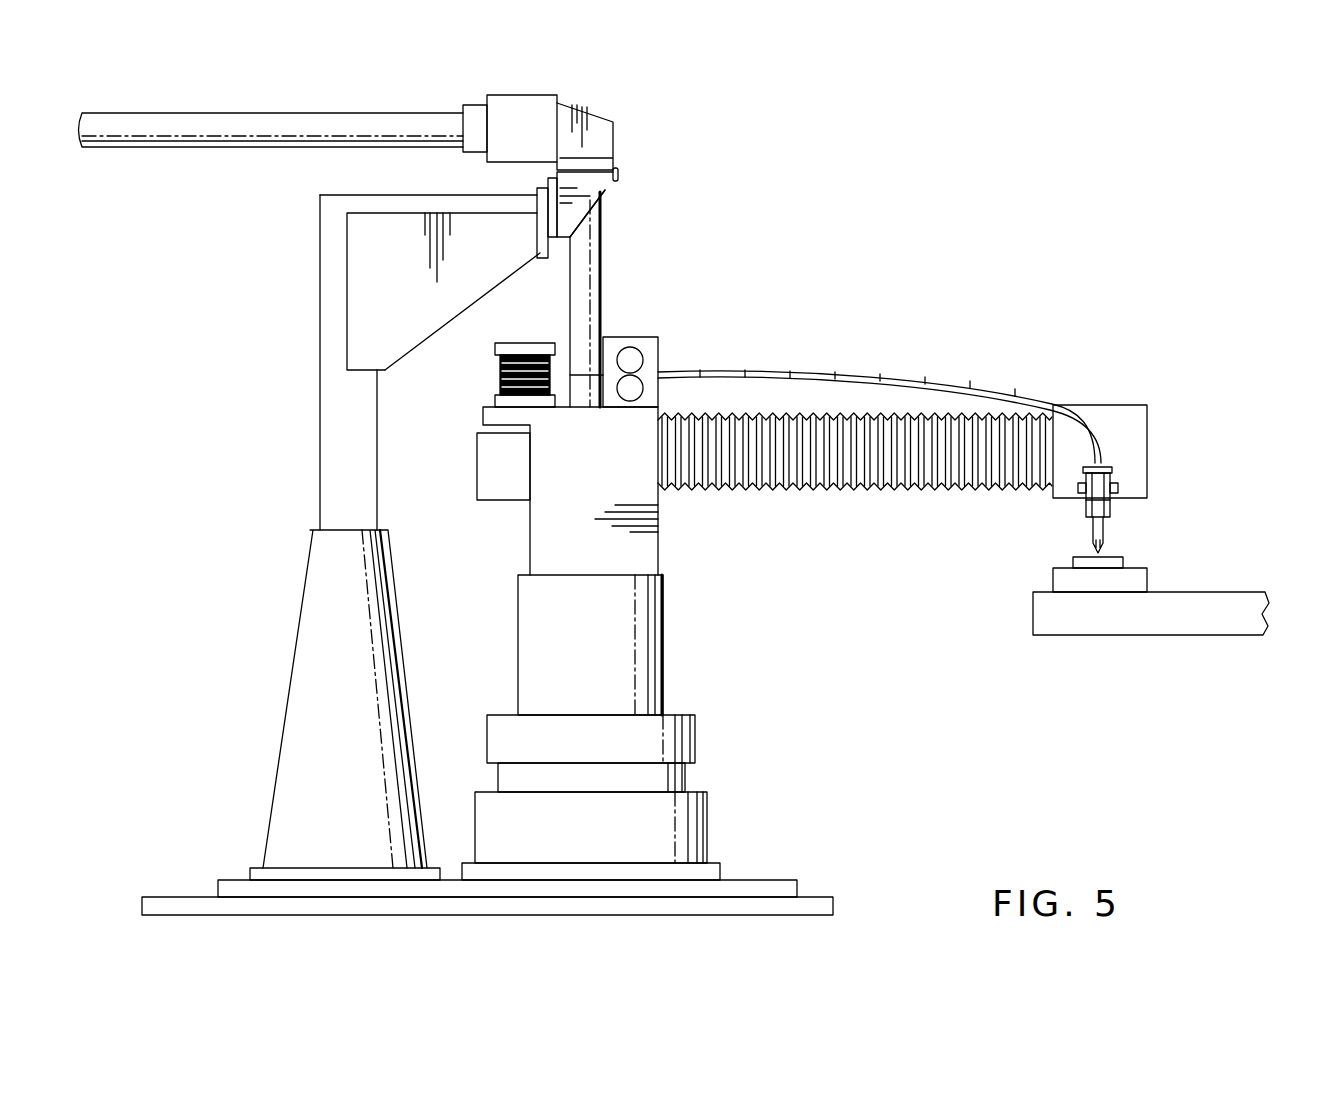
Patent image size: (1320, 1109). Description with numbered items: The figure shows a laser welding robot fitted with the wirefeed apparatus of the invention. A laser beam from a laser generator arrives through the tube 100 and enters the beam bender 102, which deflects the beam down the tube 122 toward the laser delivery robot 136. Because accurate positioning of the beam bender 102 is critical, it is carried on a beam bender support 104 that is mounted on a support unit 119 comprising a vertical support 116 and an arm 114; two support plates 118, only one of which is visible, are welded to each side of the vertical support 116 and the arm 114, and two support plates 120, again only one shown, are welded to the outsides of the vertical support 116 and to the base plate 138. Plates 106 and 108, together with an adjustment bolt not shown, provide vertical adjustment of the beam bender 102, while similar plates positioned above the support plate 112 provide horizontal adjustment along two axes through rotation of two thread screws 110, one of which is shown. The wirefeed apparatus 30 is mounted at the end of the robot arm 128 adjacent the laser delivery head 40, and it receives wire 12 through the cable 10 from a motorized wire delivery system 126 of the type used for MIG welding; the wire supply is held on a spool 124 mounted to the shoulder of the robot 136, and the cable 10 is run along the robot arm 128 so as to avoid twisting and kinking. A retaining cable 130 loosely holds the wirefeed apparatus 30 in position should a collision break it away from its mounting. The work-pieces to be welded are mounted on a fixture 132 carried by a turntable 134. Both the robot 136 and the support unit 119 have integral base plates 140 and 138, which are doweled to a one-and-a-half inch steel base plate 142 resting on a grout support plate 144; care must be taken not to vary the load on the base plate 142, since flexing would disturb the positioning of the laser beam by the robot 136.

The cable 10 is at (863, 383).
The wire 12 is at (564, 372).
The wirefeed apparatus 30 is at (1117, 514).
The laser delivery head 40 is at (1147, 452).
The tube 100 is at (223, 130).
The beam bender 102 is at (603, 113).
The beam bender support 104 is at (608, 197).
The plate 106 is at (537, 188).
The plate 108 is at (553, 222).
The thread screw 110 is at (619, 177).
The support plate 112 is at (593, 183).
The arm 114 is at (367, 198).
The vertical support 116 is at (328, 347).
The support plate 118 is at (410, 325).
The support unit 119 is at (298, 484).
The support plate 120 is at (320, 632).
The tube 122 is at (582, 265).
The spool 124 is at (521, 347).
The motorized wire delivery system 126 is at (653, 358).
The robot arm 128 is at (893, 478).
The cable 130 is at (1088, 508).
The fixture 132 is at (1060, 577).
The turntable 134 is at (1175, 625).
The laser delivery robot 136 is at (676, 650).
The base plate 138 is at (258, 868).
The base plate 140 is at (712, 868).
The base plate 142 is at (237, 888).
The grout support plate 144 is at (815, 905).